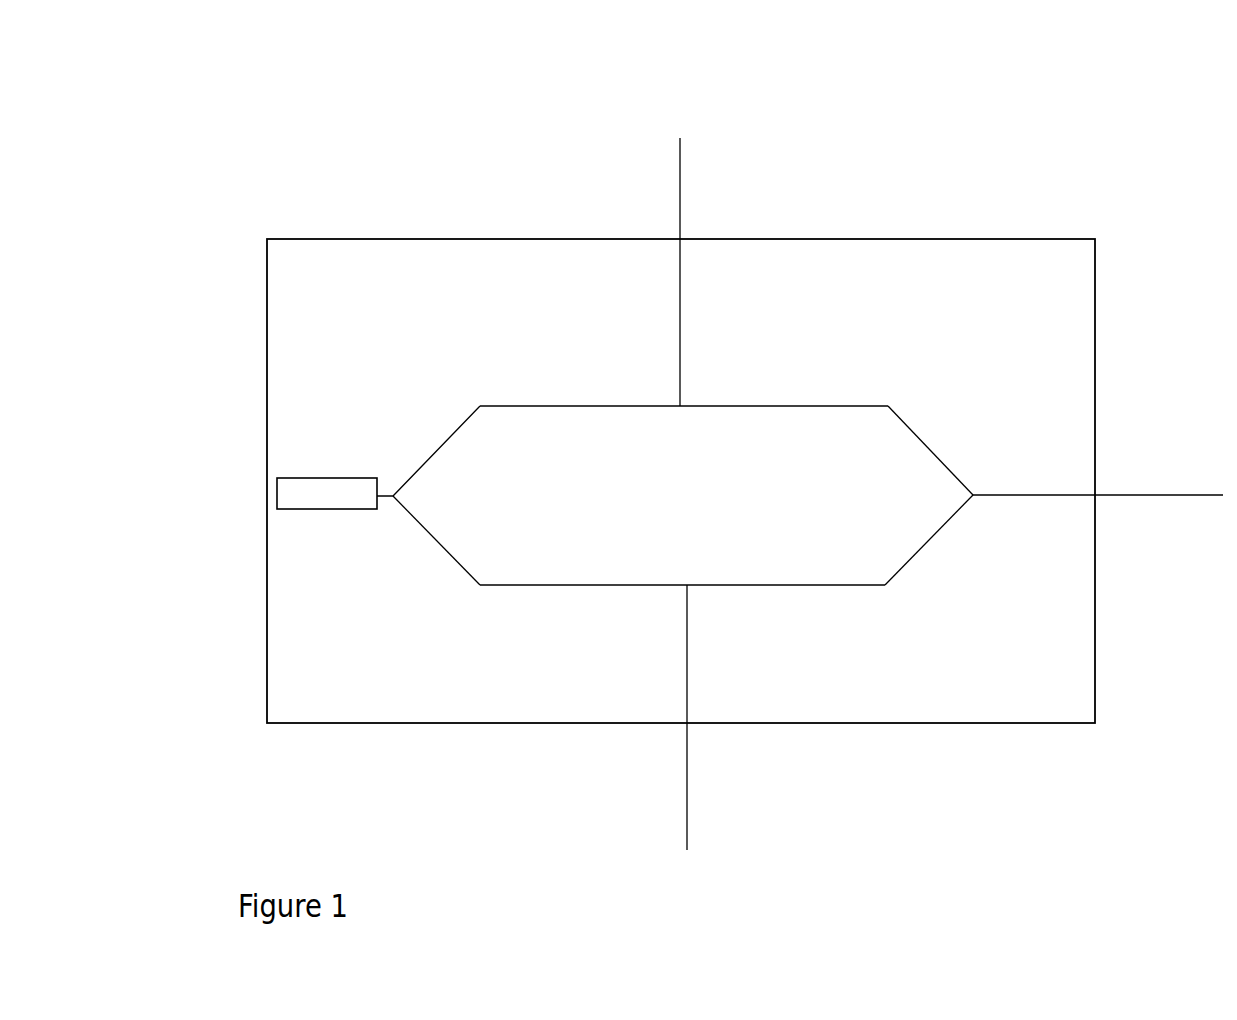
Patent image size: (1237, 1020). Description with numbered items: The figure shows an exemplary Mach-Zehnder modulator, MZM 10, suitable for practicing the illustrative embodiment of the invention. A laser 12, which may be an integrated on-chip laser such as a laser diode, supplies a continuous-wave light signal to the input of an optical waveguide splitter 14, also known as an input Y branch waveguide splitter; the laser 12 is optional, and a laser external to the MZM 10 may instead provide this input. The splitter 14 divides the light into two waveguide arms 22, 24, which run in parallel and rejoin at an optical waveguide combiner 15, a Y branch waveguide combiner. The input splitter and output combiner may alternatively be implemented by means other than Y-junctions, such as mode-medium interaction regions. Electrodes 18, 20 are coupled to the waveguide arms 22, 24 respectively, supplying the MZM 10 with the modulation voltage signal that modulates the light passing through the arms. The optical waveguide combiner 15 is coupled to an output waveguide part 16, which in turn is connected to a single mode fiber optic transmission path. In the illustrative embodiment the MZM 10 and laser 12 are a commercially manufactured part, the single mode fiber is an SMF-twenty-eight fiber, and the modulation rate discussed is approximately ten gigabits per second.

The MZM 10 is at (1088, 124).
The laser 12 is at (309, 509).
The optical waveguide splitter 14 is at (446, 441).
The optical waveguide combiner 15 is at (939, 458).
The output waveguide part 16 is at (1212, 495).
The electrode 18 is at (680, 162).
The electrode 20 is at (687, 817).
The waveguide arm 22 is at (797, 406).
The waveguide arm 24 is at (783, 585).